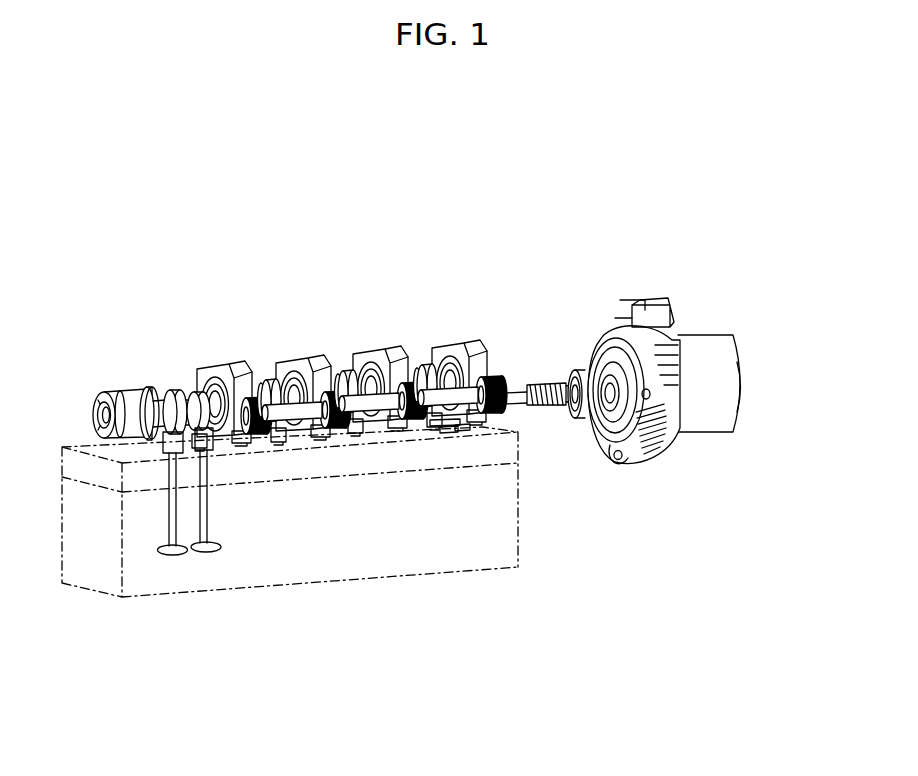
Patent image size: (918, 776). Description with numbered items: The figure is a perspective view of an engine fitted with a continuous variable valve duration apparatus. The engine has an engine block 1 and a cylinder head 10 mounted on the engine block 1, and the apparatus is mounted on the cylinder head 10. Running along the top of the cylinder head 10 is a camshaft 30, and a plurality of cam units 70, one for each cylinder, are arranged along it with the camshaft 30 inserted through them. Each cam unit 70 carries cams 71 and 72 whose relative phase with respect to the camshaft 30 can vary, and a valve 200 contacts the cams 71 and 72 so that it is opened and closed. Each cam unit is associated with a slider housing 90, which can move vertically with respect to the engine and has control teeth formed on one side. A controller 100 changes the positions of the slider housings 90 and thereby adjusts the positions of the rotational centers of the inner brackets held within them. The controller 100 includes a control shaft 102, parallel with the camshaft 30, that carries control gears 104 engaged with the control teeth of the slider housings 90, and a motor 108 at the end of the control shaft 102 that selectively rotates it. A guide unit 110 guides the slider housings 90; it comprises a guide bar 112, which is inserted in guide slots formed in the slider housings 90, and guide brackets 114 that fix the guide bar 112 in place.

The engine block 1 is at (425, 577).
The cylinder head 10 is at (522, 446).
The camshaft 30 is at (92, 400).
The cam unit 70 is at (184, 378).
The cam 71 is at (177, 390).
The cam 72 is at (192, 390).
The slider housing 90 is at (221, 363).
The controller 100 is at (664, 370).
The control shaft 102 is at (541, 387).
The control gear 104 is at (498, 382).
The motor 108 is at (702, 417).
The guide unit 110 is at (473, 432).
The guide bar 112 is at (457, 428).
The guide bracket 114 is at (457, 433).
The valve 200 is at (172, 556).